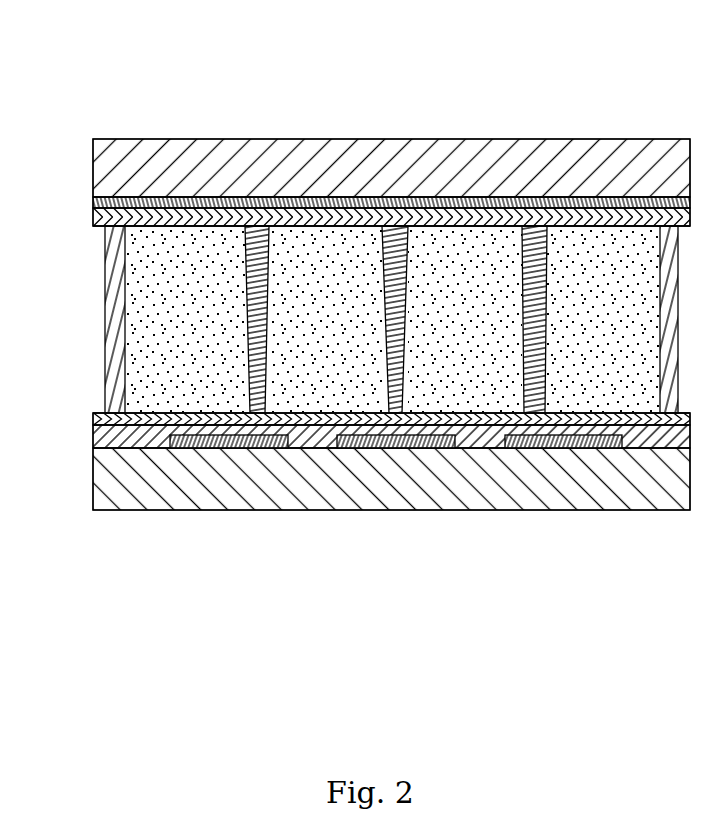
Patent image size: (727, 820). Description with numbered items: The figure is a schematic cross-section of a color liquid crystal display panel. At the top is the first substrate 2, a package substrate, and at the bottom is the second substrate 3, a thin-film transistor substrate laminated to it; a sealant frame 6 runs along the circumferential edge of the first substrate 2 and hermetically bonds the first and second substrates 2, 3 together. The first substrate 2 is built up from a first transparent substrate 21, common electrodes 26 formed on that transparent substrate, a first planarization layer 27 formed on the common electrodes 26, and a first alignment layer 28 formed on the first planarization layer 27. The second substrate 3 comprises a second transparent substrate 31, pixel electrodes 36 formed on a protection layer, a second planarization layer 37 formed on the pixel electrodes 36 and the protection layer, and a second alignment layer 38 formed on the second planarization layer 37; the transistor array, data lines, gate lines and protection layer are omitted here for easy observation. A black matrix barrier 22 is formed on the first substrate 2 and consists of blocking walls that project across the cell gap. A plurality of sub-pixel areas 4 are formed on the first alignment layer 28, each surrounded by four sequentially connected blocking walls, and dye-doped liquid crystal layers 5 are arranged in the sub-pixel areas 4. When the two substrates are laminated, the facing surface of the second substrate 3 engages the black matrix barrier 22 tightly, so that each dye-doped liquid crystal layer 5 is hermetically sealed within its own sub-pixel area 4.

The first substrate 2 is at (440, 57).
The first transparent substrate 21 is at (152, 150).
The black matrix barrier 22 is at (238, 228).
The common electrodes 26 is at (371, 205).
The first planarization layer 27 is at (249, 213).
The first alignment layer 28 is at (405, 223).
The second substrate 3 is at (120, 574).
The second transparent substrate 31 is at (135, 487).
The pixel electrodes 36 is at (206, 443).
The second planarization layer 37 is at (297, 440).
The second alignment layer 38 is at (323, 440).
The sub-pixel areas 4 is at (623, 235).
The dye-doped liquid crystal layers 5 is at (578, 295).
The sealant frame 6 is at (117, 329).